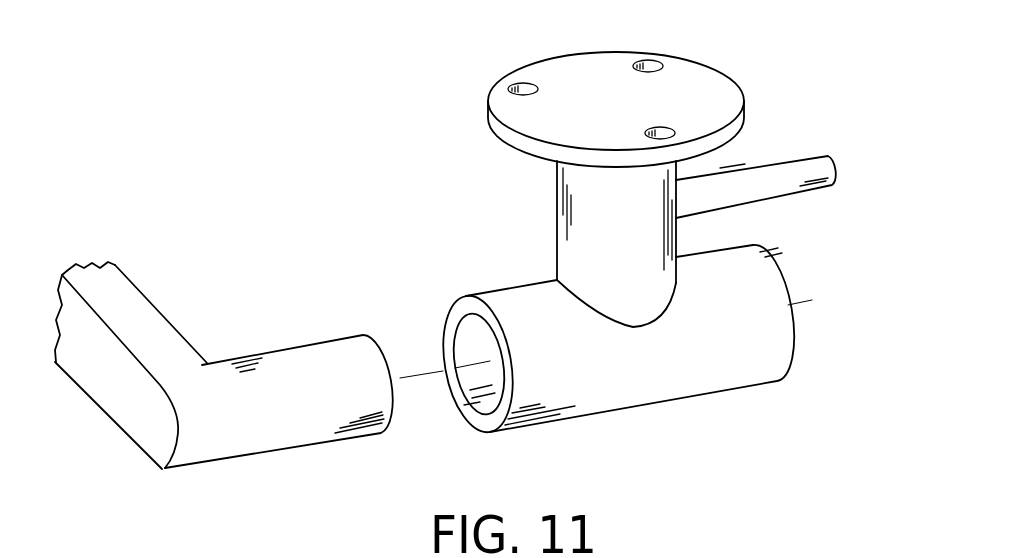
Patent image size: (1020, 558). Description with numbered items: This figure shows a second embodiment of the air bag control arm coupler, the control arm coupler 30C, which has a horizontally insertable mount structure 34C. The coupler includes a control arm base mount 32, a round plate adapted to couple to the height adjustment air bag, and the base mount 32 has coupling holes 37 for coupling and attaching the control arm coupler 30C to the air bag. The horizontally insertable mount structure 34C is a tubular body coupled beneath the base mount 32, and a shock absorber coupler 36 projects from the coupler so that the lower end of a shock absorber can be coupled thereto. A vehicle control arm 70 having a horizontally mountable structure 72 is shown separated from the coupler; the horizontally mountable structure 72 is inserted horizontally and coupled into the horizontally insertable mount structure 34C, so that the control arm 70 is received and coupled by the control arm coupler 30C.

The control arm coupler 30C is at (879, 0).
The control arm base mount 32 is at (693, 83).
The horizontally insertable mount structure 34C is at (733, 373).
The shock absorber coupler 36 is at (780, 175).
The coupling holes 37 is at (650, 62).
The control arm 70 is at (125, 402).
The horizontally mountable structure 72 is at (282, 428).